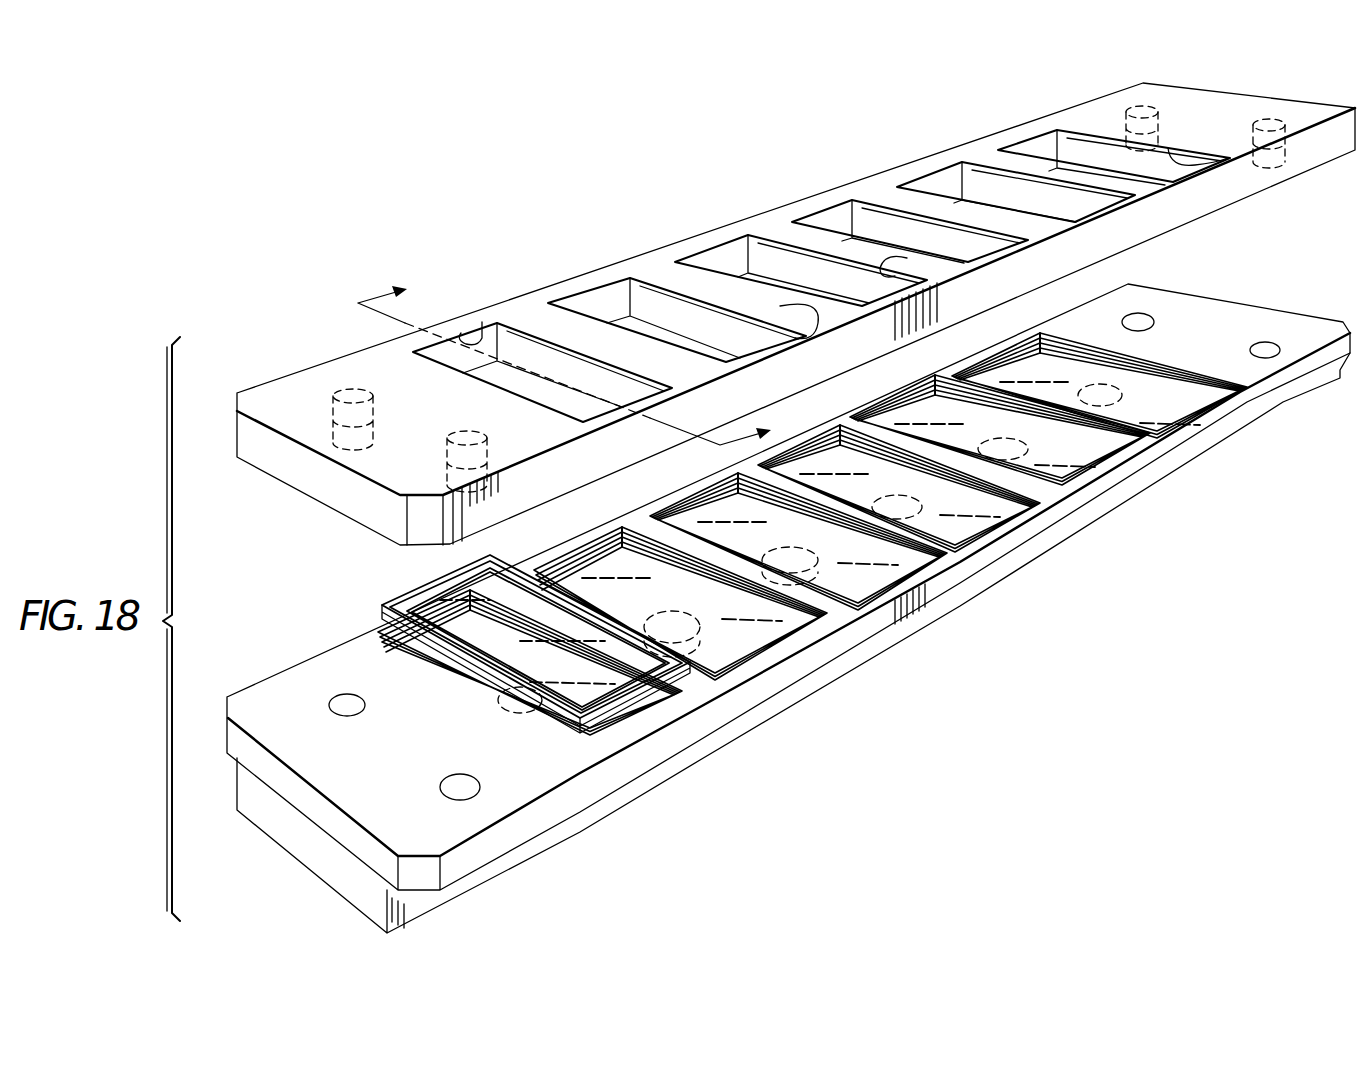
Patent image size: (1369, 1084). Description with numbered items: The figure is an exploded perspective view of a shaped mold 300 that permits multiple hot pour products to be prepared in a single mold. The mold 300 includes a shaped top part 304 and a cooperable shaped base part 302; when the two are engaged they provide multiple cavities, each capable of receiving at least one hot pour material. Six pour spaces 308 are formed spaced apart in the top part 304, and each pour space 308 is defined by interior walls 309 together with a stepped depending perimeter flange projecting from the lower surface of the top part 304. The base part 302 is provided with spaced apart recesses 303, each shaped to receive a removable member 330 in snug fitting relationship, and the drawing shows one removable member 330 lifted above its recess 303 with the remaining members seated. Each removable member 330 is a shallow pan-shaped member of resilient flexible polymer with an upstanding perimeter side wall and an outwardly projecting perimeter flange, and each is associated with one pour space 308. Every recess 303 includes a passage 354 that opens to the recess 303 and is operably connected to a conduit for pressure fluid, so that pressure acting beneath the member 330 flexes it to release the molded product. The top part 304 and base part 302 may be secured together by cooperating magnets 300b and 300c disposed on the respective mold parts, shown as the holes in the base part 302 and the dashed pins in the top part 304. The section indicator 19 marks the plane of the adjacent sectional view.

The shaped mold 300 is at (228, 478).
The base part 302 is at (290, 670).
The top part 304 is at (304, 370).
The pour space 308 is at (648, 298).
The interior wall 309 is at (482, 336).
The magnet 300b is at (440, 787).
The magnet 300c is at (455, 432).
The recess 303 is at (1118, 366).
The removable member 330 is at (405, 577).
The passage 354 is at (812, 572).
The section line 19- 19 is at (578, 357).